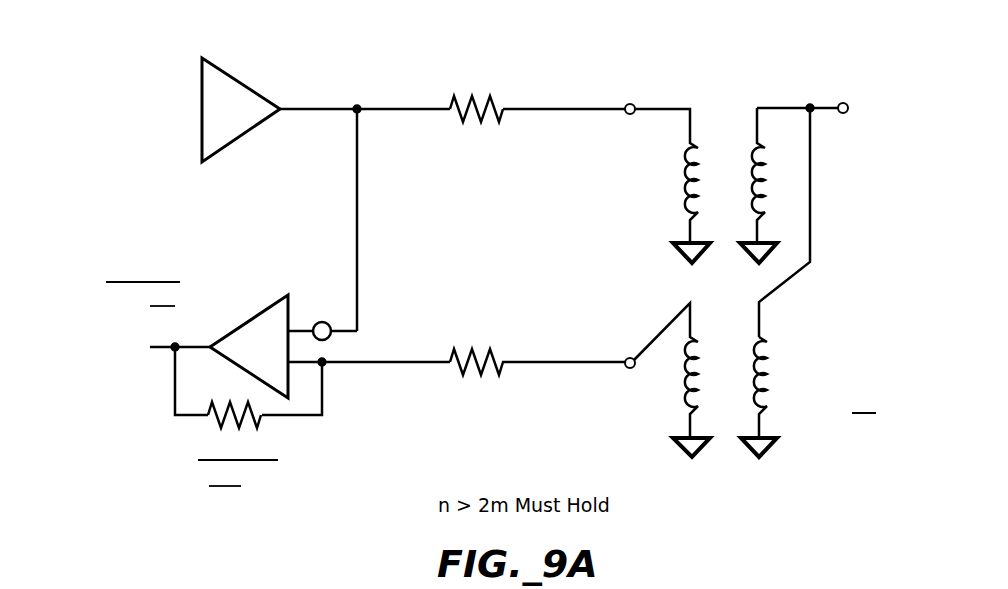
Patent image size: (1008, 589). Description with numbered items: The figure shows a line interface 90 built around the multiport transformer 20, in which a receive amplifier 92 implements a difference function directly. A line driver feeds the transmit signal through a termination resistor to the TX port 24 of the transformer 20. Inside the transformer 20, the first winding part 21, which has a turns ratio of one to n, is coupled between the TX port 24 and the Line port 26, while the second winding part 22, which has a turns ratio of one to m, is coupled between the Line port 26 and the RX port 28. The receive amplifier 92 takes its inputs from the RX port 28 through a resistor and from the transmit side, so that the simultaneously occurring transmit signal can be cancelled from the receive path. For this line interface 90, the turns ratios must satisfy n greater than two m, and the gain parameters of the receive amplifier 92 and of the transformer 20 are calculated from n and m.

The line interface 90 is at (564, 32).
The transformer 20 is at (755, 251).
The first winding part 21 is at (770, 189).
The second winding part 22 is at (770, 383).
The TX port 24 is at (634, 103).
The Line port 26 is at (848, 113).
The RX port 28 is at (628, 370).
The receive amplifier 92 is at (320, 430).